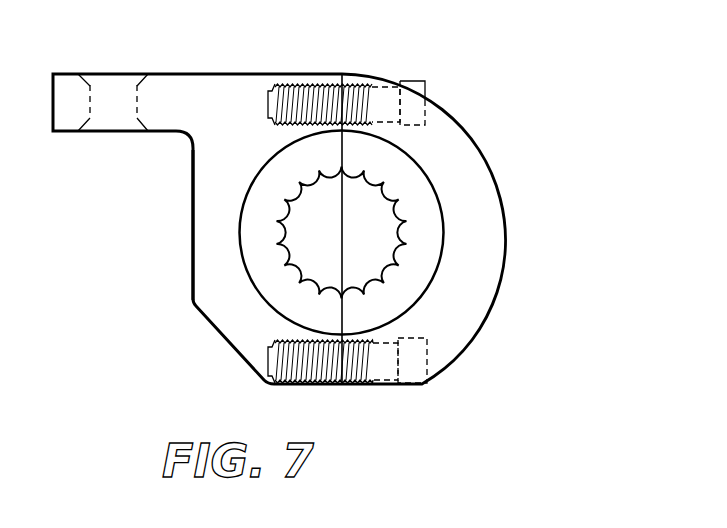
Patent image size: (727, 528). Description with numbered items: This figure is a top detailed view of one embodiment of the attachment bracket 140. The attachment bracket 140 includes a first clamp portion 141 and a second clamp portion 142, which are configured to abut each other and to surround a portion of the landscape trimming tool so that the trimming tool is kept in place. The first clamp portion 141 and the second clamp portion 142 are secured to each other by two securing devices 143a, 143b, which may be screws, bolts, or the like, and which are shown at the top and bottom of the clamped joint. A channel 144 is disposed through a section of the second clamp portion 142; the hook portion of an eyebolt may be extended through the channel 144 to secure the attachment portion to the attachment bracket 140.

The attachment bracket 140 is at (332, 231).
The first clamp portion 141 is at (468, 147).
The second clamp portion 142 is at (203, 245).
The securing device 143a is at (387, 84).
The securing device 143b is at (385, 379).
The channel 144 is at (117, 75).